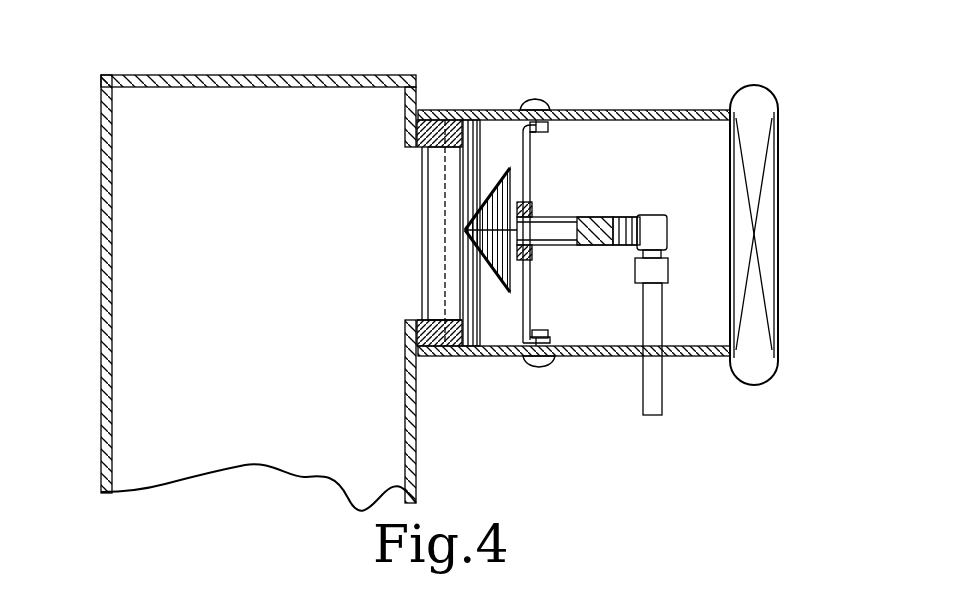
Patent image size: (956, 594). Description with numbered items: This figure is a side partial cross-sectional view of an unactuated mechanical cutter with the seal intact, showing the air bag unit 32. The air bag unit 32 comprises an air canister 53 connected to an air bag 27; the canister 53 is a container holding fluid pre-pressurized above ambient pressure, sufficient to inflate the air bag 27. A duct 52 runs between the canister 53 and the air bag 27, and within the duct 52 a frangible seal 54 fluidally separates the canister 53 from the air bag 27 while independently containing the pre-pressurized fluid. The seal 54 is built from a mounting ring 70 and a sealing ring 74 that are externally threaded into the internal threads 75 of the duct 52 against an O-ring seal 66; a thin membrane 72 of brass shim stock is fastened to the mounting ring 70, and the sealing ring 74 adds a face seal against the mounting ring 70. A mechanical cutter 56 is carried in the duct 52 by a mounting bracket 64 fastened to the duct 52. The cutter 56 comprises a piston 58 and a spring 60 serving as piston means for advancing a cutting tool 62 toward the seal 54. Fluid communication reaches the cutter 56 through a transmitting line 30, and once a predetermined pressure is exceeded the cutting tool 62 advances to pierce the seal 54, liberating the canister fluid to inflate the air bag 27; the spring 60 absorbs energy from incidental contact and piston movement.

The air canister 53 is at (100, 90).
The air bag unit 32 is at (98, 237).
The duct 52 is at (620, 110).
The air bag 27 is at (772, 100).
The O-ring seal 66 is at (420, 147).
The mounting ring 70 is at (437, 322).
The sealing ring 74 is at (455, 322).
The membrane 72 is at (440, 190).
The seal 54 is at (462, 228).
The cutting tool 62 is at (486, 270).
The mounting bracket 64 is at (531, 155).
The internal threads 75 is at (518, 108).
The mechanical cutter 56 is at (580, 228).
The spring 60 is at (608, 248).
The piston 58 is at (626, 225).
The transmitting line 30 is at (643, 400).